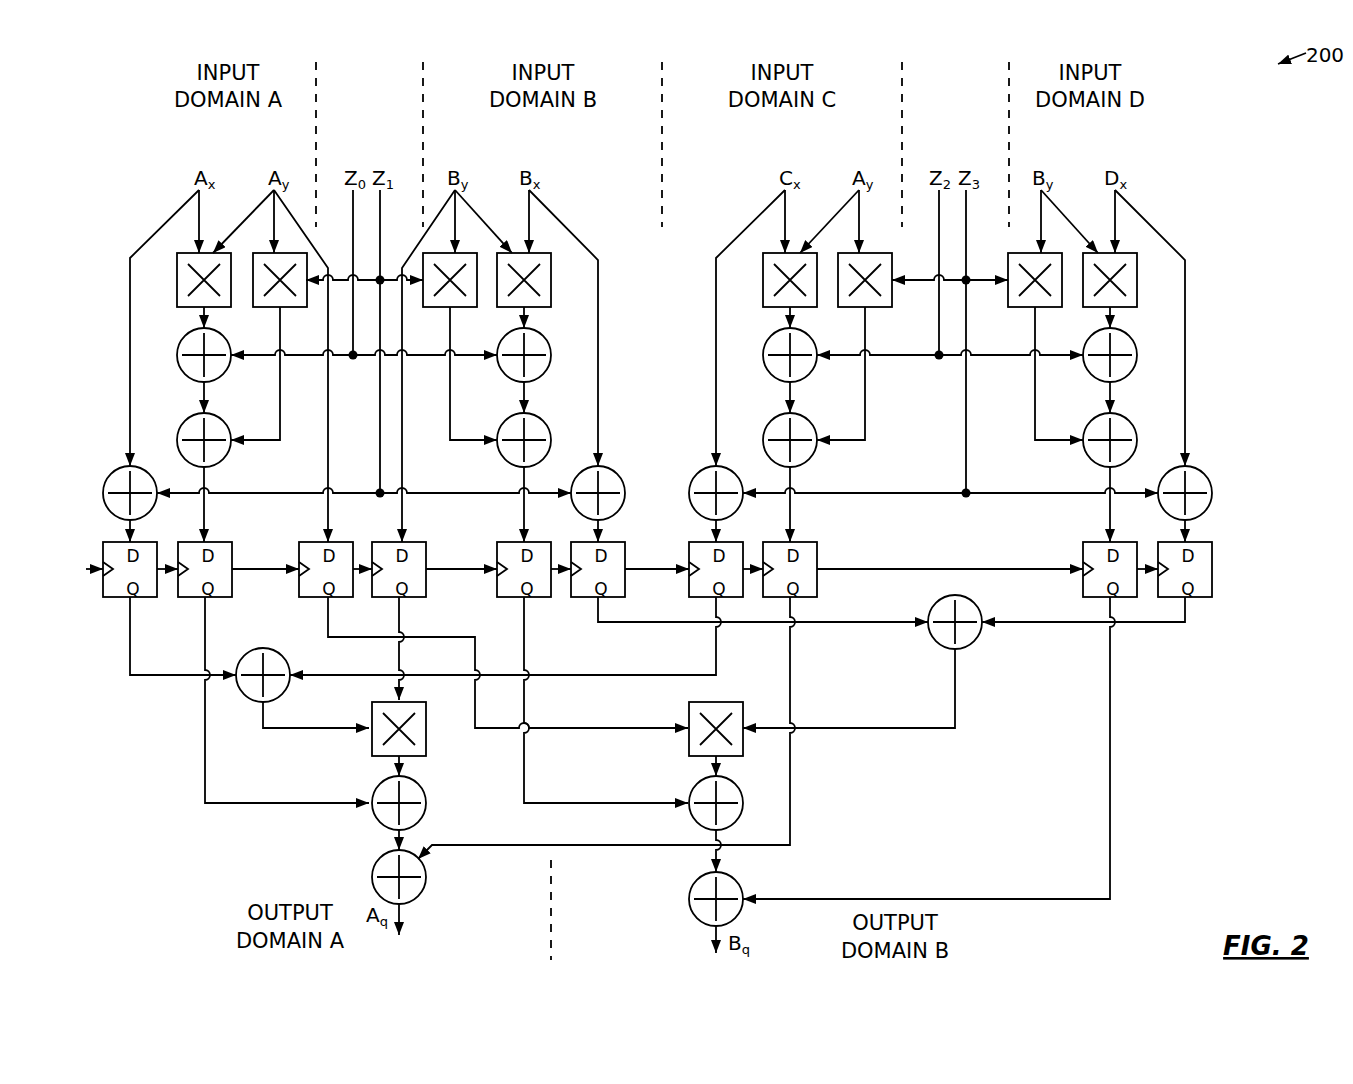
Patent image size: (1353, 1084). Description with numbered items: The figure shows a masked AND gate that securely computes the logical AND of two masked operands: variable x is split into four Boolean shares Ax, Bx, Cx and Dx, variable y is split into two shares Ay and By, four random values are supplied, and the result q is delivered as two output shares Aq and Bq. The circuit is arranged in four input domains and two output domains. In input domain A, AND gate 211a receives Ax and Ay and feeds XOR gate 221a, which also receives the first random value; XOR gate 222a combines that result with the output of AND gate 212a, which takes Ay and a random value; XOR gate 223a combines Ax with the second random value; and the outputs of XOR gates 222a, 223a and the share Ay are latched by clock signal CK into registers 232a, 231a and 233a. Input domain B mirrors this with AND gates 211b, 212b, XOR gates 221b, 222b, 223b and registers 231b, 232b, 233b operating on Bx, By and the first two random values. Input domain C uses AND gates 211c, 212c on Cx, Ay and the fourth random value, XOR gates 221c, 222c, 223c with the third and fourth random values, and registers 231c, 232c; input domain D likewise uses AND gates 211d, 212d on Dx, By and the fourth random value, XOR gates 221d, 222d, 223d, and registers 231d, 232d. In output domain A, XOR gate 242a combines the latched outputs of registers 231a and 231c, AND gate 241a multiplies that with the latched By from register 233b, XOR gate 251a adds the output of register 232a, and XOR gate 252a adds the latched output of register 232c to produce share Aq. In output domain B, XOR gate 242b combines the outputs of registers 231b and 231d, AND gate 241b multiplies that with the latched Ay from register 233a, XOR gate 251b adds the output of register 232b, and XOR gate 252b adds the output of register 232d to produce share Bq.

The AND gate 211a is at (192, 308).
The AND gate 212a is at (270, 308).
The AND gate 211b is at (538, 308).
The AND gate 212b is at (457, 308).
The AND gate 211c is at (777, 308).
The AND gate 212c is at (857, 308).
The AND gate 211d is at (1119, 308).
The AND gate 212d is at (1031, 308).
The XOR gate 221a is at (198, 381).
The XOR gate 222a is at (214, 462).
The XOR gate 223a is at (122, 517).
The XOR gate 221b is at (528, 381).
The XOR gate 222b is at (514, 462).
The XOR gate 223b is at (606, 520).
The XOR gate 221c is at (784, 381).
The XOR gate 222c is at (798, 462).
The XOR gate 223c is at (704, 471).
The XOR gate 221d is at (1114, 381).
The XOR gate 222d is at (1101, 462).
The XOR gate 223d is at (1197, 470).
The register 231a is at (118, 597).
The register 232a is at (195, 597).
The register 233a is at (312, 597).
The register 231b is at (609, 597).
The register 232b is at (532, 597).
The register 233b is at (412, 597).
The register 231c is at (724, 597).
The register 232c is at (806, 597).
The register 231d is at (1176, 597).
The register 232d is at (1092, 597).
The AND gate 241a is at (420, 757).
The XOR gate 242a is at (275, 698).
The XOR gate 251a is at (420, 818).
The XOR gate 252a is at (418, 894).
The AND gate 241b is at (700, 757).
The XOR gate 242b is at (948, 648).
The XOR gate 251b is at (693, 821).
The XOR gate 252b is at (692, 917).